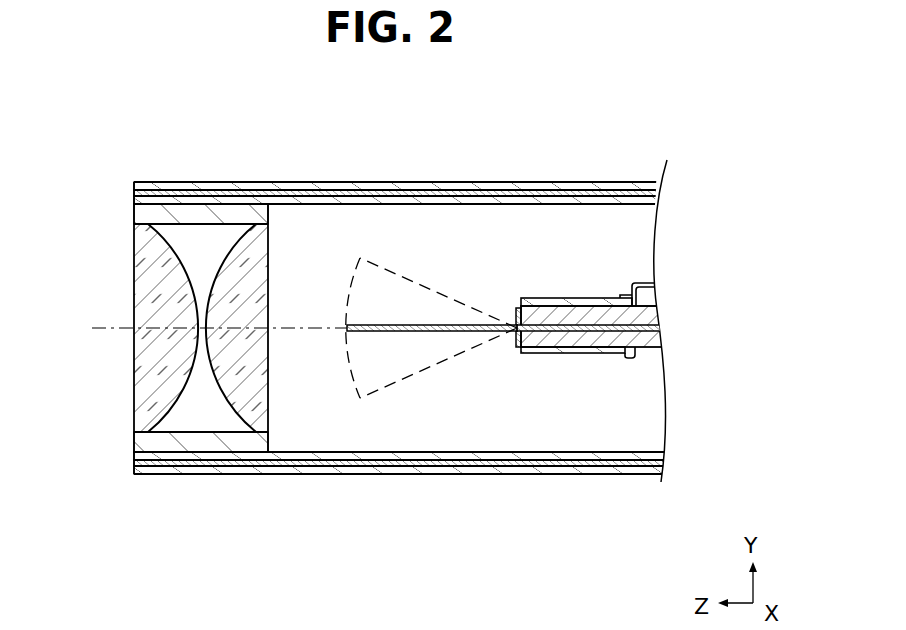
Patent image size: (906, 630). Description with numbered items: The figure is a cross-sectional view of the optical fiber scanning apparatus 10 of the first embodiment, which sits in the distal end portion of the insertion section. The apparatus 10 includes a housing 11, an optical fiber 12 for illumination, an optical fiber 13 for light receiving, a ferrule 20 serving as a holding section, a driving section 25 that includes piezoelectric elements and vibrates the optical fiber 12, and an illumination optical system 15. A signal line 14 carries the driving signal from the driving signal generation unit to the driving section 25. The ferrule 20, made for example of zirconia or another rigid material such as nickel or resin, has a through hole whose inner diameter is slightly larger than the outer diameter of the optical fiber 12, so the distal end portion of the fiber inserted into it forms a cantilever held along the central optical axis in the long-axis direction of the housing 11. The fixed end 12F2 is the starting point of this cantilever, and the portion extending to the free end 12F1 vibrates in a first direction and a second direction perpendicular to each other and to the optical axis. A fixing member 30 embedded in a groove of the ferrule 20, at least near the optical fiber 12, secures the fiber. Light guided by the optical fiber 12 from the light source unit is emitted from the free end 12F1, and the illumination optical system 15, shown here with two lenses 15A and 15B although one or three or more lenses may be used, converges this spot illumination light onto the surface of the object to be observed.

The optical fiber scanning apparatus 10 is at (90, 190).
The housing 11 is at (196, 183).
The optical fiber 12 is at (420, 332).
The free end 12F1 is at (350, 332).
The fixed end 12F2 is at (516, 335).
The optical fiber 13 is at (338, 190).
The signal line 14 is at (645, 283).
The illumination optical system 15 is at (265, 530).
The lens 15A is at (173, 425).
The lens 15B is at (229, 425).
The ferrule 20 is at (650, 355).
The driving section 25 is at (585, 354).
The fixing member 30 is at (628, 325).